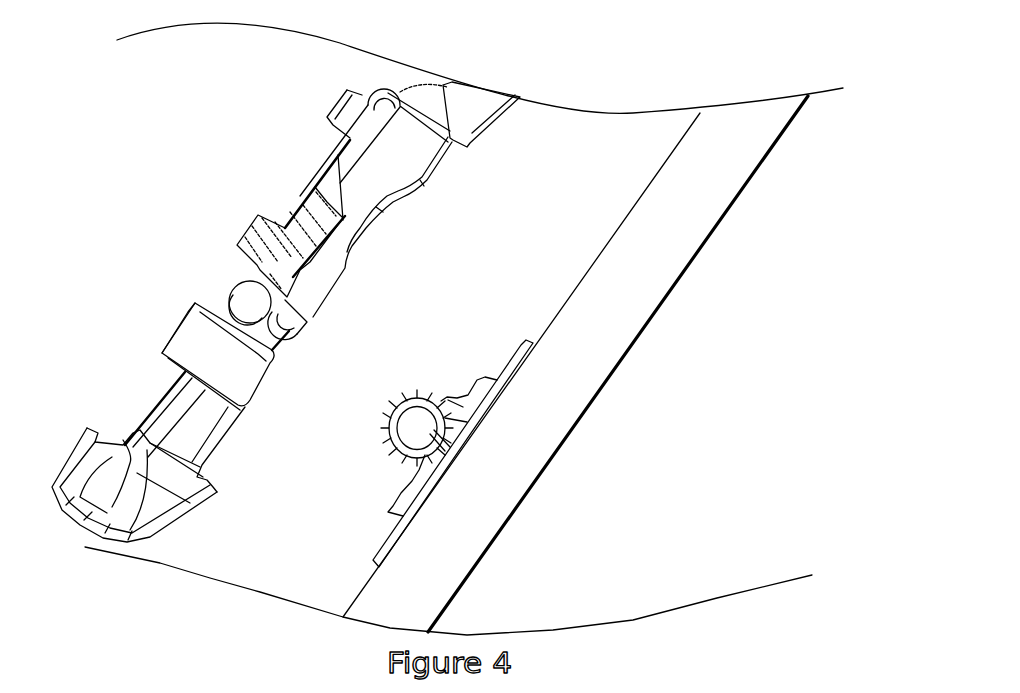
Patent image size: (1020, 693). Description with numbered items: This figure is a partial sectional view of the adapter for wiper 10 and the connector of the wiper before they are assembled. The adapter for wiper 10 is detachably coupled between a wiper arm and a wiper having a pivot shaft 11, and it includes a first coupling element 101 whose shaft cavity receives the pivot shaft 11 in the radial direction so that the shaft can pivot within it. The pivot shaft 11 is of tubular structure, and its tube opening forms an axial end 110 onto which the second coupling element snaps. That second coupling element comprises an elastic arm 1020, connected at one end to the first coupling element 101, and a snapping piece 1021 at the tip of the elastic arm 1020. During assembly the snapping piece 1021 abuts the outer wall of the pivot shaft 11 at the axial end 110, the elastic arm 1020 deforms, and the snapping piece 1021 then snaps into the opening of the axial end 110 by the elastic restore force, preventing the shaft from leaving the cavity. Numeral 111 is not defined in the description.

The adapter for wiper 10 is at (256, 138).
The first coupling element 101 is at (243, 278).
The clip block 111 is at (252, 307).
The elastic arm 1020 is at (298, 298).
The snapping piece 1021 is at (294, 330).
The axial end 110 is at (427, 433).
The pivot shaft 11 is at (397, 450).